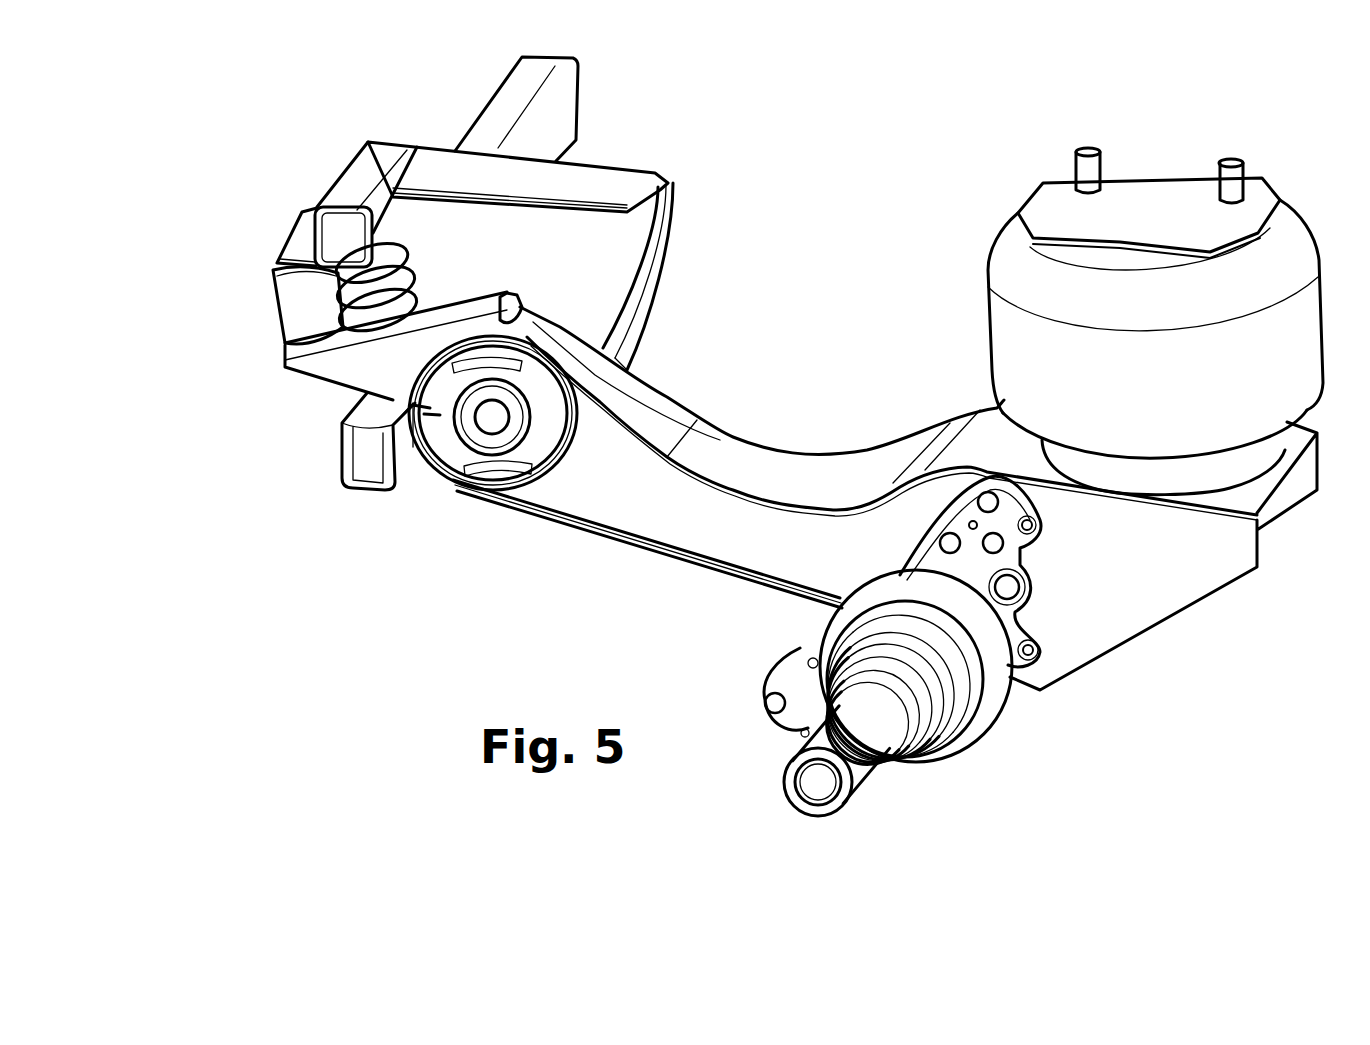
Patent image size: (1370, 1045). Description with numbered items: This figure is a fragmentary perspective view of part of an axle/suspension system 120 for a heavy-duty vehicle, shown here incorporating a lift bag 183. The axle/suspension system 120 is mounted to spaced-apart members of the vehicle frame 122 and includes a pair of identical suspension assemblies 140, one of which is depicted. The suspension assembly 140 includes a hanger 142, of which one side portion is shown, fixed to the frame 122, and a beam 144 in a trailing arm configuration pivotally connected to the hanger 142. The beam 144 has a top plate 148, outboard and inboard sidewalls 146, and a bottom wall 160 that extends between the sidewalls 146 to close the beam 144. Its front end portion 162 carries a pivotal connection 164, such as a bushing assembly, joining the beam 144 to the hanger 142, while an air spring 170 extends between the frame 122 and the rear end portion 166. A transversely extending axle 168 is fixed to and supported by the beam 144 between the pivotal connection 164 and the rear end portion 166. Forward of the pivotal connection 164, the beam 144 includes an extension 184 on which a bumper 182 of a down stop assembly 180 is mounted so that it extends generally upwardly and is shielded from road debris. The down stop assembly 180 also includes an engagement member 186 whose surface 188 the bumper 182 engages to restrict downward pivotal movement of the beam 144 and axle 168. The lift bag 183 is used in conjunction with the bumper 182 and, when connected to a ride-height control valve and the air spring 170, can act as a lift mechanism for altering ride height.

The axle/suspension system 120 is at (948, 205).
The frame 122 is at (367, 473).
The suspension assembly 140 is at (1022, 701).
The hanger 142 is at (534, 259).
The beam 144 is at (788, 564).
The sidewalls 146 is at (693, 533).
The top plate 148 is at (713, 437).
The bottom wall 160 is at (787, 601).
The front end portion 162 is at (543, 497).
The pivotal connection 164 is at (483, 467).
The rear end portion 166 is at (1075, 647).
The axle 168 is at (987, 697).
The air spring 170 is at (1115, 385).
The down stop assembly 180 is at (230, 275).
The bumper 182 is at (293, 320).
The lift bag 183 is at (410, 257).
The extension 184 is at (313, 373).
The engagement member 186 is at (292, 249).
The surface 188 is at (348, 247).